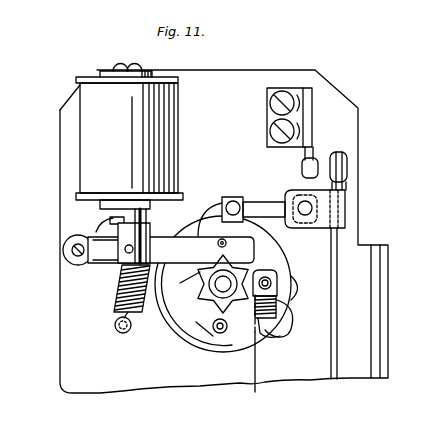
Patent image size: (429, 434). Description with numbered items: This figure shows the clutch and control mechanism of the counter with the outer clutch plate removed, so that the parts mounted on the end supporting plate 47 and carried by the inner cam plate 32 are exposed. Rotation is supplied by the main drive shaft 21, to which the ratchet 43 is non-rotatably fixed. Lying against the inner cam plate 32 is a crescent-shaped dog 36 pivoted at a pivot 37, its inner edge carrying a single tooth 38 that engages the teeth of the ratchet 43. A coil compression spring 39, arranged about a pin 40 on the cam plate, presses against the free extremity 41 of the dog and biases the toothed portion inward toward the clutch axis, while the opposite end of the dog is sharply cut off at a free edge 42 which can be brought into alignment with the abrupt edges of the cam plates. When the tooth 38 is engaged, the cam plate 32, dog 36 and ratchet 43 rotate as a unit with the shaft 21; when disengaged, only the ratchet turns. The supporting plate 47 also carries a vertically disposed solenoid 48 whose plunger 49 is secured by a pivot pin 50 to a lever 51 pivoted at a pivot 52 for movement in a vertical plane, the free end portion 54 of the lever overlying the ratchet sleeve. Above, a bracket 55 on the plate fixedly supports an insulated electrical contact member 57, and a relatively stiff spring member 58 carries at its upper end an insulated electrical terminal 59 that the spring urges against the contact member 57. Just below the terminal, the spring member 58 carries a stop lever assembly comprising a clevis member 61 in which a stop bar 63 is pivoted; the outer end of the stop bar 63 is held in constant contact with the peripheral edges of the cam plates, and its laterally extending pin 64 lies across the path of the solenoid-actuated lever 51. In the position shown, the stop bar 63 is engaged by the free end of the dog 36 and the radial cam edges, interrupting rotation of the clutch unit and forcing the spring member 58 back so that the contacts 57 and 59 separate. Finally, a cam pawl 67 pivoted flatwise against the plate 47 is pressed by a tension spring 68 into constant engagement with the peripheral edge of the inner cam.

The main drive shaft 21 is at (228, 283).
The cam plate 32 is at (276, 260).
The dog 36 is at (177, 299).
The pivot 37 is at (219, 334).
The tooth 38 is at (195, 325).
The coil compression spring 39 is at (286, 333).
The pin 40 is at (265, 338).
The free extremity 41 is at (264, 350).
The free edge 42 is at (216, 208).
The ratchet 43 is at (200, 305).
The end supporting plate 47 is at (246, 80).
The solenoid 48 is at (129, 137).
The plunger 49 is at (112, 220).
The pivot pin 50 is at (120, 265).
The lever 51 is at (101, 263).
The pivot 52 is at (71, 259).
The free end portion 54 is at (189, 223).
The bracket 55 is at (312, 113).
The electrical contact member 57 is at (313, 158).
The spring member 58 is at (338, 302).
The electrical terminal 59 is at (343, 152).
The clevis member 61 is at (346, 207).
The stop bar 63 is at (267, 203).
The laterally extending pin 64 is at (235, 198).
The cam pawl 67 is at (149, 236).
The tension spring 68 is at (110, 316).